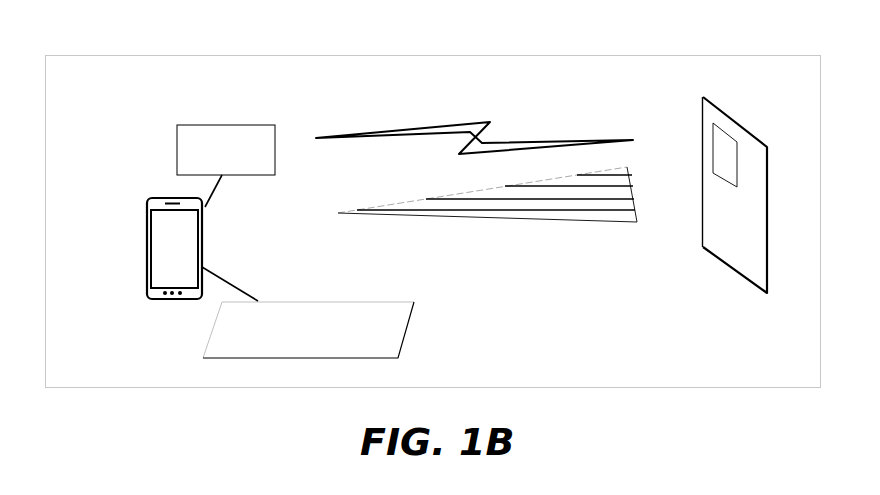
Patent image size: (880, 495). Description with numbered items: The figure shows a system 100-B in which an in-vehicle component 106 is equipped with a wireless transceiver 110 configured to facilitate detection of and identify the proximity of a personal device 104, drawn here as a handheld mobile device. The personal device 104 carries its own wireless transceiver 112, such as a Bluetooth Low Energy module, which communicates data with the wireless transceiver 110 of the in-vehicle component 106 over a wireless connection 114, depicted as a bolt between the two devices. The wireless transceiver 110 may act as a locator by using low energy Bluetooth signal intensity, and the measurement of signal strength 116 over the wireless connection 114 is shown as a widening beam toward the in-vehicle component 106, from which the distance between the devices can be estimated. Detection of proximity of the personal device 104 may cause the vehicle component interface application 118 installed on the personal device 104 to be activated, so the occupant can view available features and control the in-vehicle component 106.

The system 100-B is at (131, 39).
The personal device 104 is at (143, 203).
The in-vehicle component 106 is at (702, 133).
The wireless transceiver 110 is at (713, 148).
The wireless transceiver 112 is at (237, 124).
The wireless connection 114 is at (452, 123).
The signal strength 116 is at (510, 219).
The vehicle component interface application 118 is at (327, 301).